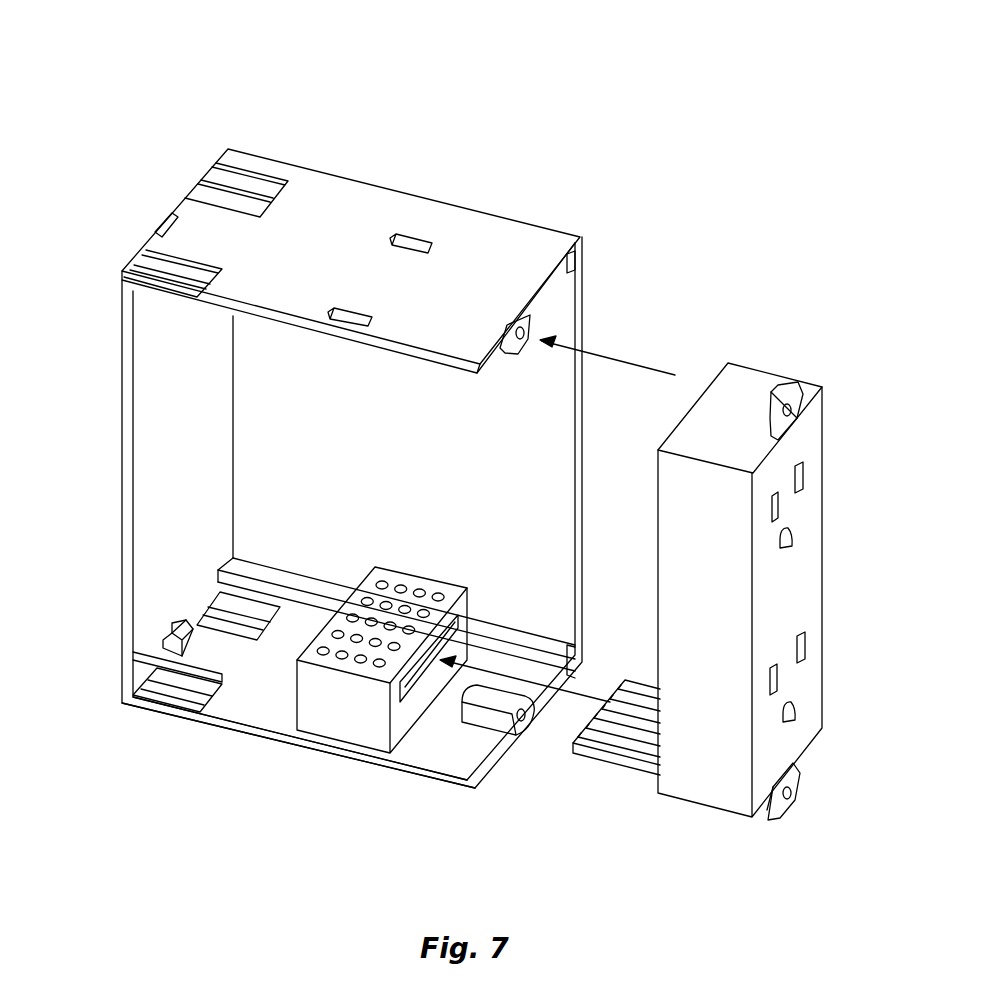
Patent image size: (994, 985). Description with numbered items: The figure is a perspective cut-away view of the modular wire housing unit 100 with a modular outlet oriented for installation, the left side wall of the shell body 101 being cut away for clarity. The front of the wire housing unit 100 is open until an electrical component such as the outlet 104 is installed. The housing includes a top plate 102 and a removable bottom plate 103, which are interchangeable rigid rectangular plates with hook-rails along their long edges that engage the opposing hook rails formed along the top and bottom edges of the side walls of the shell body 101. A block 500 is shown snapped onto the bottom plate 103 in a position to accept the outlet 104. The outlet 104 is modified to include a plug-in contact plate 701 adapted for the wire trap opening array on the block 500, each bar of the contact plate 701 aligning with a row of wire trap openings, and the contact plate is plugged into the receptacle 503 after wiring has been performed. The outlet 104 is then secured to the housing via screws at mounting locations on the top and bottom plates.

The wire housing unit 100 is at (724, 178).
The shell body 101 is at (122, 436).
The top plate 102 is at (320, 207).
The bottom plate 103 is at (287, 745).
The outlet 104 is at (822, 440).
The block 500 is at (407, 568).
The receptacle 503 is at (408, 688).
The plug-in contact plate 701 is at (608, 763).